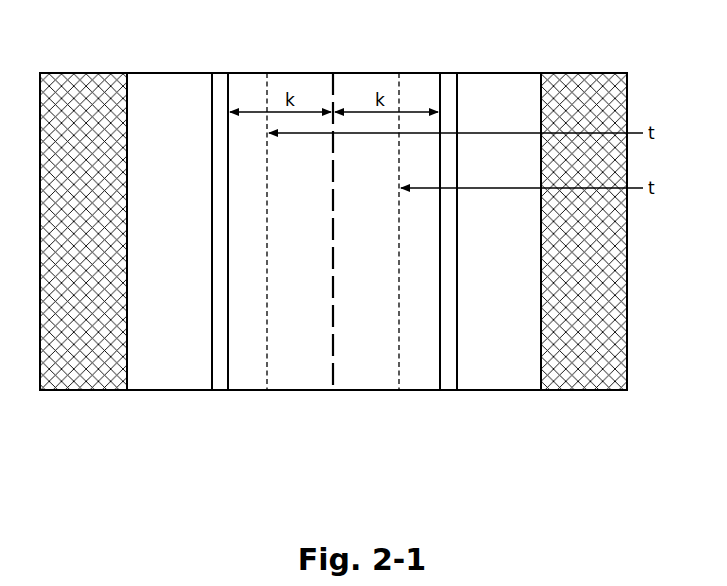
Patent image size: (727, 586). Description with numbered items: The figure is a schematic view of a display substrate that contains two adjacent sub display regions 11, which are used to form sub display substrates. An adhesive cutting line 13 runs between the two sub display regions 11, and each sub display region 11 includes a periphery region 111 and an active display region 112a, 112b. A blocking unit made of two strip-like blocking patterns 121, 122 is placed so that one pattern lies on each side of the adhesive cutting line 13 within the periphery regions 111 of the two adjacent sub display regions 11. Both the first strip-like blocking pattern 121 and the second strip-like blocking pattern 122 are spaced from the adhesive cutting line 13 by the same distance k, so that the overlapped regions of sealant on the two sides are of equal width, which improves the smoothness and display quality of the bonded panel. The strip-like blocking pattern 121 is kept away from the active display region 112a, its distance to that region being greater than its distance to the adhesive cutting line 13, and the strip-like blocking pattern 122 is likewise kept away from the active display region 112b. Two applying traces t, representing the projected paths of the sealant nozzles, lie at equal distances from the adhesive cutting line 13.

The sub display region 11 is at (333, 57).
The periphery region 111 is at (541, 396).
The active display region 112a is at (40, 396).
The active display region 112b is at (541, 396).
The strip-like blocking pattern 121 is at (211, 342).
The strip-like blocking pattern 122 is at (458, 340).
The adhesive cutting line 13 is at (335, 272).